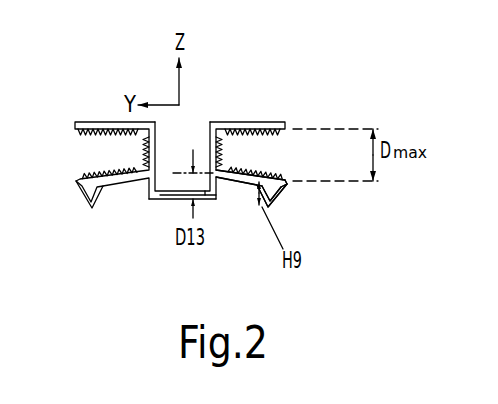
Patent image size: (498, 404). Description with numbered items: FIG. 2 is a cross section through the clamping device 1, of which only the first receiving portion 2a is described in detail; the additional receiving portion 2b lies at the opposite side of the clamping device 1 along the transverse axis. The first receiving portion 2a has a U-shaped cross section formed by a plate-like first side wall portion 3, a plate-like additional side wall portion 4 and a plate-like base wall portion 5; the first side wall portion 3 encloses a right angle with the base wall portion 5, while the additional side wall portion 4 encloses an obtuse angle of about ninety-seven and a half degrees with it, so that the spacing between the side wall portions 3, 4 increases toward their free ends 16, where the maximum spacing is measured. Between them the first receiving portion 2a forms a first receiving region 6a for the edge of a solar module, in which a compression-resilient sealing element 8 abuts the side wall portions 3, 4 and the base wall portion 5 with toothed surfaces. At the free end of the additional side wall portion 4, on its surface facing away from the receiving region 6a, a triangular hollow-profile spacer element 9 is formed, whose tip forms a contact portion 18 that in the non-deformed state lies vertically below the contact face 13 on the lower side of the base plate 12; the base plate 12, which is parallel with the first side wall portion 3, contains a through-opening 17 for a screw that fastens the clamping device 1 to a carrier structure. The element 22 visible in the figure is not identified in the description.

The clamping device 1 is at (93, 240).
The first receiving portion 2a is at (293, 152).
The additional receiving portion 2b is at (78, 153).
The first side wall portion 3 is at (253, 123).
The additional side wall portion 4 is at (243, 175).
The base wall portion 5 is at (212, 158).
The first receiving region 6a is at (270, 152).
The sealing element 8 is at (238, 174).
The spacer element 9 is at (276, 191).
The base plate 12 is at (158, 190).
The contact face 13 is at (160, 200).
The free ends 16 is at (283, 182).
The through-opening 17 is at (180, 200).
The contact portion 18 is at (270, 209).
The groove wall 22 is at (219, 201).